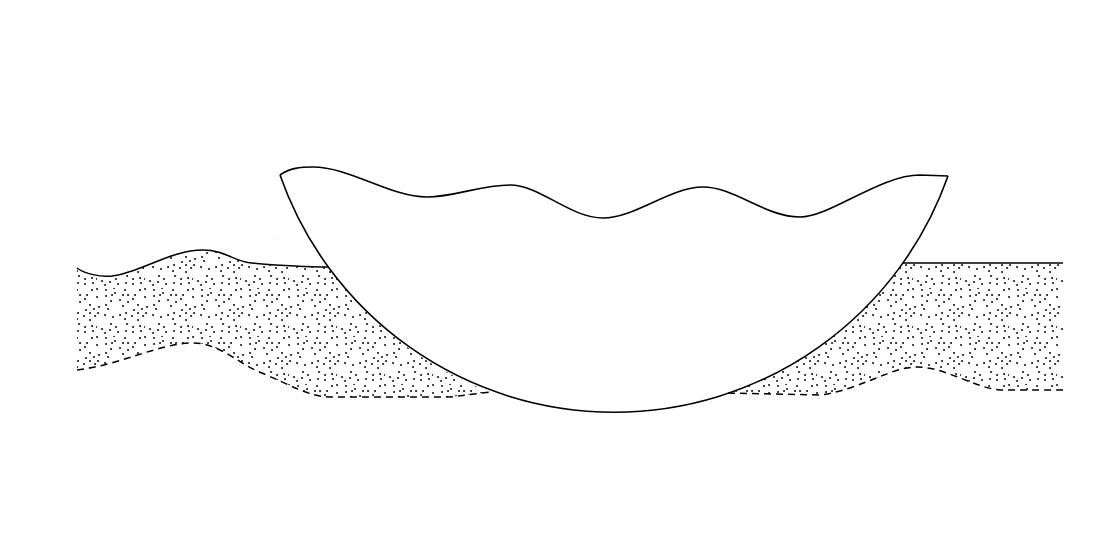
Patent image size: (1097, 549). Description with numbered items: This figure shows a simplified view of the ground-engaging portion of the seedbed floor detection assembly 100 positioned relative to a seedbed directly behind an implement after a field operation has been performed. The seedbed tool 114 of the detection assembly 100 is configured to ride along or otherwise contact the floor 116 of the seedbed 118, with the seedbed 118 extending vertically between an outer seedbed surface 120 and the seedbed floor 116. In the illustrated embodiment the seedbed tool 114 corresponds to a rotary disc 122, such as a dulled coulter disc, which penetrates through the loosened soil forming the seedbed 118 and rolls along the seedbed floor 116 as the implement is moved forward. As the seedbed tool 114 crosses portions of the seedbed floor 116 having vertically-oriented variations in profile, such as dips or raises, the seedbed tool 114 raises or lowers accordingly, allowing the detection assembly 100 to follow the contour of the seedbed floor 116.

The detection assembly 100 is at (256, 74).
The seedbed tool 114 is at (270, 236).
The seedbed floor 116 is at (1007, 397).
The seedbed 118 is at (270, 323).
The outer seedbed surface 120 is at (977, 263).
The rotary disc 122 is at (299, 205).